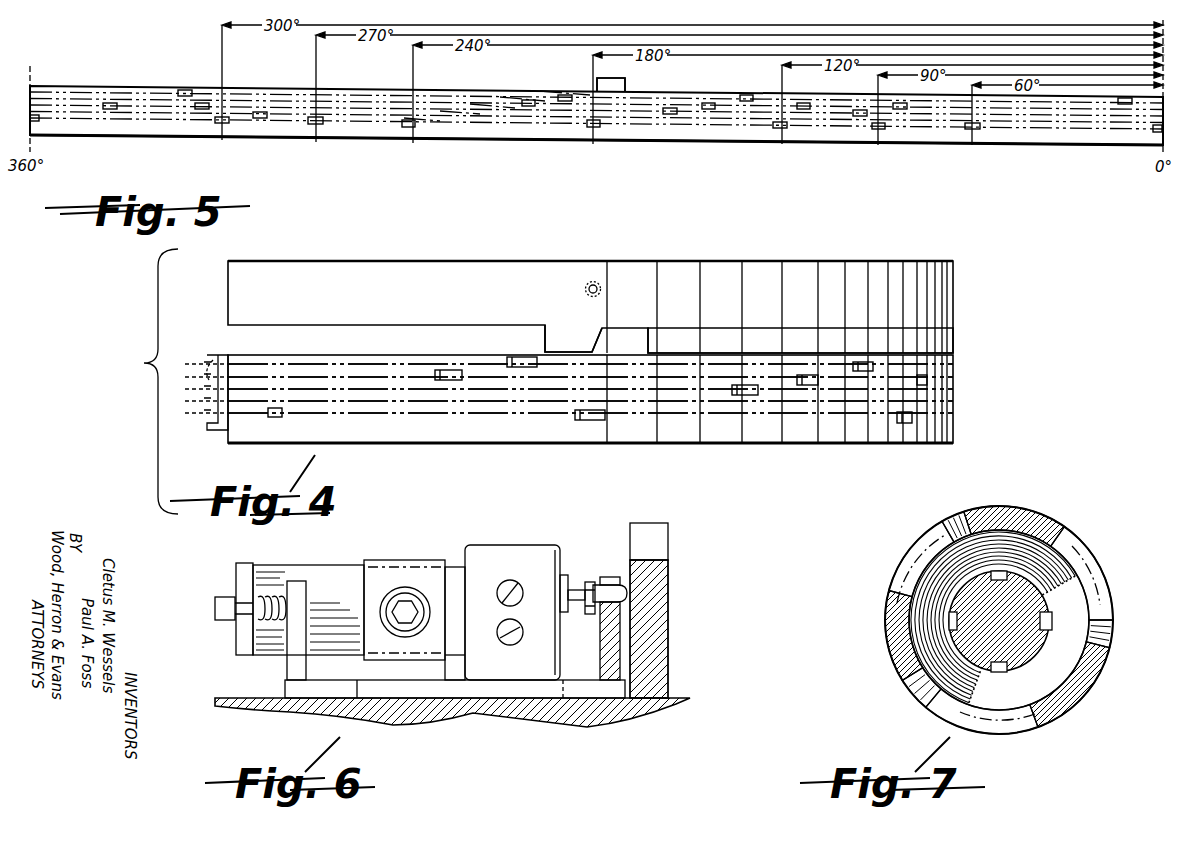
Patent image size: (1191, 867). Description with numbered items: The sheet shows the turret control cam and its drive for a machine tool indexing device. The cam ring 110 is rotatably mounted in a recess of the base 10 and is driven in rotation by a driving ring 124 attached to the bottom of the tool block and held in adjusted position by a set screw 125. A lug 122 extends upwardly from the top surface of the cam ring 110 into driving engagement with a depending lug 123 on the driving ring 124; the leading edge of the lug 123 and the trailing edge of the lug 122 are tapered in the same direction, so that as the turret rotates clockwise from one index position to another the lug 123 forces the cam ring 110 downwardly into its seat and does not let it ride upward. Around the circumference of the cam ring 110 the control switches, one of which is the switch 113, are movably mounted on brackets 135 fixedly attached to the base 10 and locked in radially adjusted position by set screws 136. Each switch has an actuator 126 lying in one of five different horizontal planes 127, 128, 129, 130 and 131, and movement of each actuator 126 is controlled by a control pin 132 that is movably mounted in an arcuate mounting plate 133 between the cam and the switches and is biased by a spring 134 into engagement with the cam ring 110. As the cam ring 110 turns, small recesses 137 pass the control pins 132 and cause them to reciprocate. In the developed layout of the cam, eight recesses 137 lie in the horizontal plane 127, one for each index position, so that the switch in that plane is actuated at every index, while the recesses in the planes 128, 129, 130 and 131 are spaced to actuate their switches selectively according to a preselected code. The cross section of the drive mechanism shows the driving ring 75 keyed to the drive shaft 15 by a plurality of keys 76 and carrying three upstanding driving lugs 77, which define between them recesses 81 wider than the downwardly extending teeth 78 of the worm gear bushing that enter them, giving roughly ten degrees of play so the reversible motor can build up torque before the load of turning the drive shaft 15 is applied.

In FIG. 6, the base 10 is at (652, 717).
In FIG. 7, the drive shaft 15 is at (1022, 658).
In FIG. 7, the driving ring 75 is at (1108, 620).
In FIG. 7, the keys 76 is at (1050, 618).
In FIG. 7, the driving teeth or lugs 77 is at (928, 545).
In FIG. 7, the driving teeth or lugs 78 is at (1022, 520).
In FIG. 7, the recesses 81 is at (962, 520).
In FIG. 5, the cam ring 110 is at (1063, 163).
In FIG. 4, the cam ring 110 is at (777, 463).
In FIG. 6, the cam ring 110 is at (671, 627).
In FIG. 6, the switch 113 is at (525, 562).
In FIG. 5, the lug 122 is at (622, 83).
In FIG. 4, the lug 122 is at (650, 330).
In FIG. 6, the lug 122 is at (658, 548).
In FIG. 4, the depending lug 123 is at (548, 350).
In FIG. 4, the driving ring 124 is at (547, 285).
In FIG. 4, the set screw 125 is at (598, 288).
In FIG. 6, the actuators 126 is at (579, 580).
In FIG. 5, the horizontal plane 127 is at (435, 122).
In FIG. 4, the horizontal plane 127 is at (955, 422).
In FIG. 5, the horizontal plane 128 is at (463, 117).
In FIG. 4, the horizontal plane 128 is at (955, 405).
In FIG. 5, the horizontal plane 129 is at (488, 108).
In FIG. 4, the horizontal plane 129 is at (959, 390).
In FIG. 5, the horizontal plane 130 is at (507, 102).
In FIG. 4, the horizontal plane 130 is at (955, 378).
In FIG. 5, the horizontal plane 131 is at (557, 95).
In FIG. 4, the horizontal plane 131 is at (955, 360).
In FIG. 4, the control pins 132 is at (206, 358).
In FIG. 6, the control pins 132 is at (613, 590).
In FIG. 6, the arcuate mounting plate 133 is at (605, 655).
In FIG. 6, the spring 134 is at (593, 603).
In FIG. 6, the brackets 135 is at (307, 667).
In FIG. 6, the set screws 136 is at (408, 596).
In FIG. 5, the recesses 137 is at (322, 125).
In FIG. 4, the recesses 137 is at (450, 372).
In FIG. 6, the recesses 137 is at (633, 590).